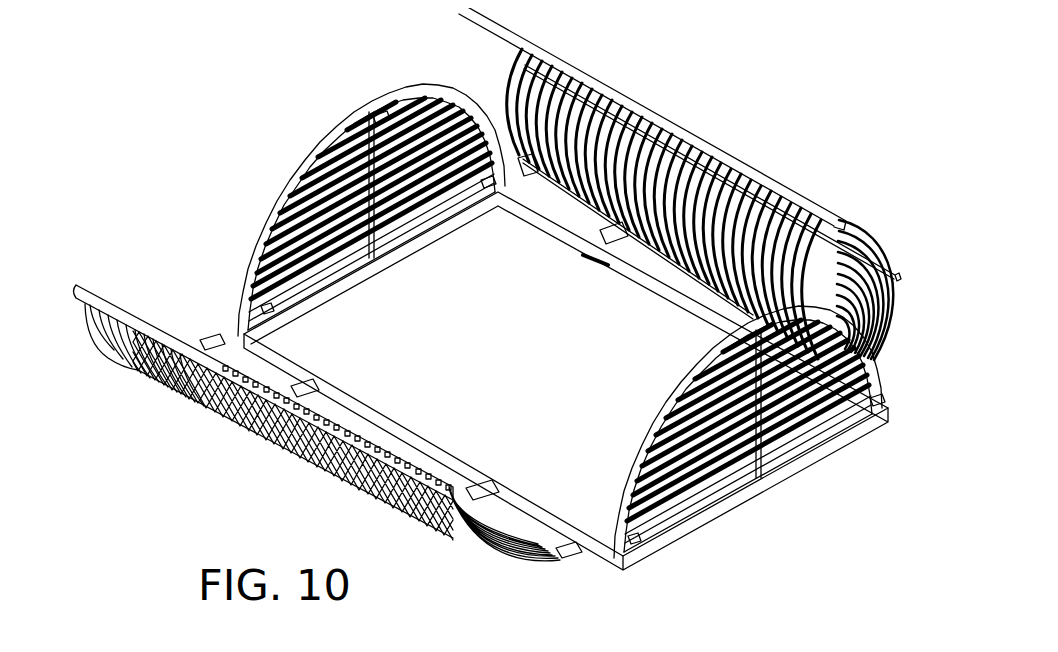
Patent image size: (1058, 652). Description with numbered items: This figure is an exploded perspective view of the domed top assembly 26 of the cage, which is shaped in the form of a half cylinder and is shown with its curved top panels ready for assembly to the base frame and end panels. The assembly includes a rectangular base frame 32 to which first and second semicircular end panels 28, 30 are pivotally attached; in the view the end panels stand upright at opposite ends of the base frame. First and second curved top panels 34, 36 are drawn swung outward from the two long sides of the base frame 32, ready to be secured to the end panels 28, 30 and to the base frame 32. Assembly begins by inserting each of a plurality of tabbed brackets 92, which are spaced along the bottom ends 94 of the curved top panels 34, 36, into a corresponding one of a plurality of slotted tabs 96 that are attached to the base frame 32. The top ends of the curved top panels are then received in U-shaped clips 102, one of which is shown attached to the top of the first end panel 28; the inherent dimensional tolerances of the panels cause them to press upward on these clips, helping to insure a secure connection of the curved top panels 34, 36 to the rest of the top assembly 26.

The domed top assembly 26 is at (248, 164).
The first semicircular end panel 28 is at (306, 143).
The second semicircular end panel 30 is at (768, 405).
The rectangular base frame 32 is at (686, 310).
The first curved top panel 34 is at (678, 126).
The second curved top panel 36 is at (245, 425).
The tabbed bracket 92 is at (578, 226).
The bottom end 94 is at (667, 243).
The slotted tab 96 is at (586, 258).
The U-shaped clip 102 is at (373, 105).